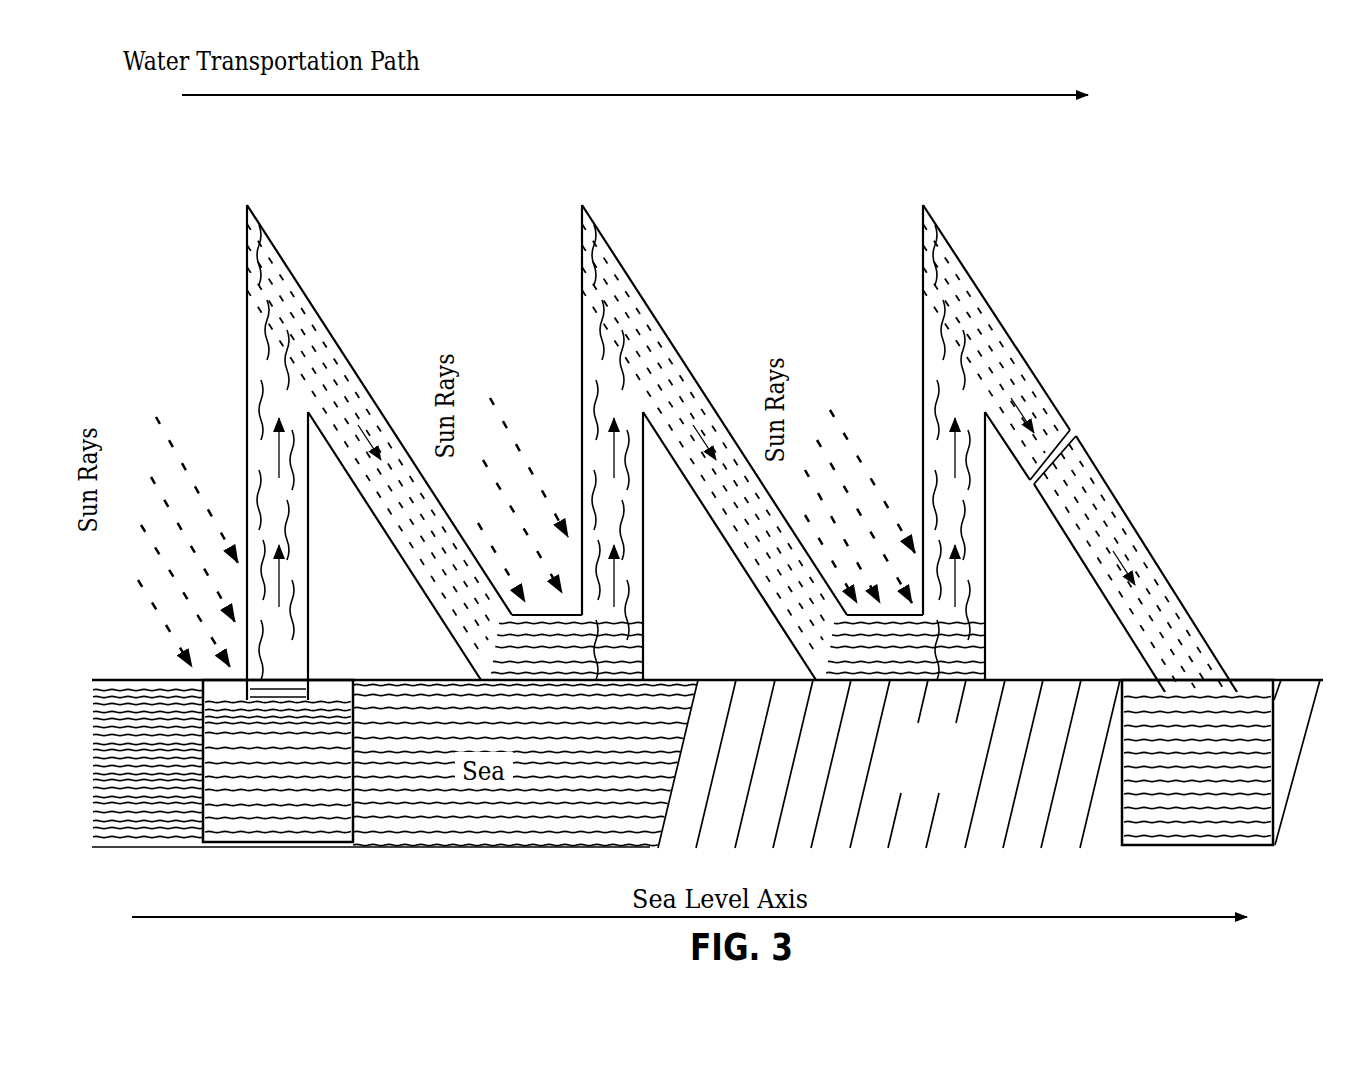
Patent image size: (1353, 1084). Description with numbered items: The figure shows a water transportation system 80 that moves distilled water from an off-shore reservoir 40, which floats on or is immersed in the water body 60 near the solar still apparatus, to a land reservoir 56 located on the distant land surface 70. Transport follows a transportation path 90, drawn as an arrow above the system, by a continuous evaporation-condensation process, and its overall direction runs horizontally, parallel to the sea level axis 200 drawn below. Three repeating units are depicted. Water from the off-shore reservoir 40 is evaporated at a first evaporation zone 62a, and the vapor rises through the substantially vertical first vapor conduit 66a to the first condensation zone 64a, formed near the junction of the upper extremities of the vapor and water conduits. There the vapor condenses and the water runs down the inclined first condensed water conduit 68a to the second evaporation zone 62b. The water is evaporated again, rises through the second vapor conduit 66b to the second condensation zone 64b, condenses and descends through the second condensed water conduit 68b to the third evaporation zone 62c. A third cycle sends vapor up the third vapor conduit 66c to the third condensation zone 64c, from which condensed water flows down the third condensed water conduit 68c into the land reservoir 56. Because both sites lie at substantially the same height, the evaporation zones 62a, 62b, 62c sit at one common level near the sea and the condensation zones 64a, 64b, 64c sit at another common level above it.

The transportation path 90 is at (430, 52).
The first condensation zone 64a is at (248, 208).
The second condensation zone 64b is at (583, 208).
The third condensation zone 64c is at (924, 208).
The first vapor conduit 66a is at (300, 597).
The second vapor conduit 66b is at (635, 597).
The third vapor conduit 66c is at (963, 597).
The first condensed water conduit 68a is at (443, 565).
The second condensed water conduit 68b is at (770, 577).
The third condensed water conduit 68c is at (1113, 575).
The first evaporation zone 62a is at (283, 682).
The second evaporation zone 62b is at (640, 657).
The third evaporation zone 62c is at (978, 657).
The water body 60 is at (140, 833).
The off-shore reservoir 40 is at (273, 832).
The sea level axis 200 is at (427, 917).
The land surface 70 is at (873, 833).
The land reservoir 56 is at (1200, 833).
The water transportation system 80 is at (1157, 263).